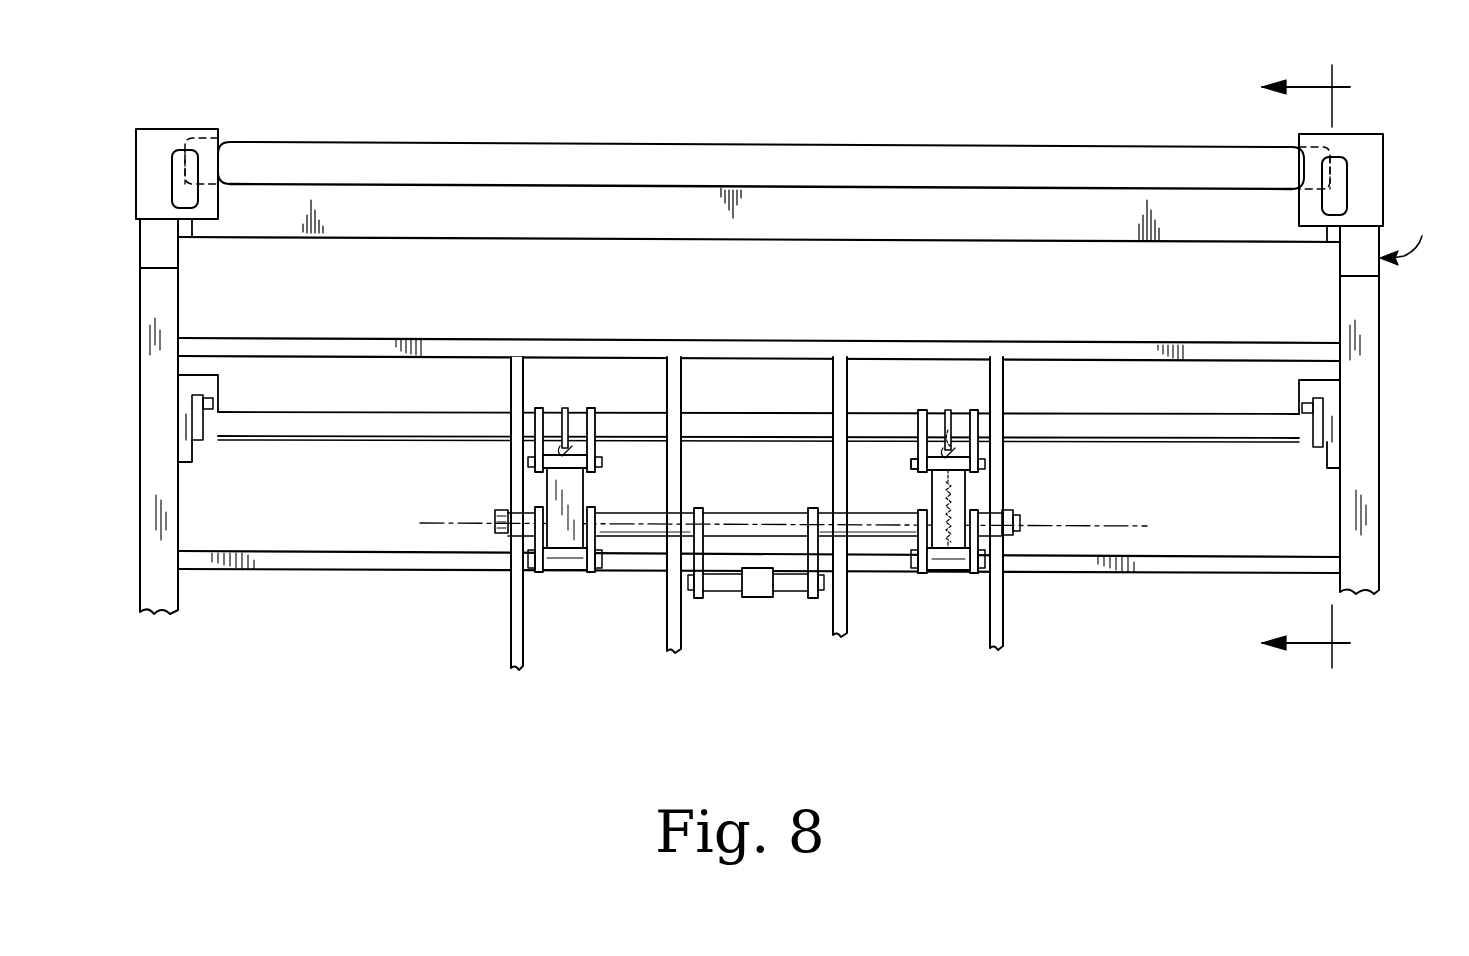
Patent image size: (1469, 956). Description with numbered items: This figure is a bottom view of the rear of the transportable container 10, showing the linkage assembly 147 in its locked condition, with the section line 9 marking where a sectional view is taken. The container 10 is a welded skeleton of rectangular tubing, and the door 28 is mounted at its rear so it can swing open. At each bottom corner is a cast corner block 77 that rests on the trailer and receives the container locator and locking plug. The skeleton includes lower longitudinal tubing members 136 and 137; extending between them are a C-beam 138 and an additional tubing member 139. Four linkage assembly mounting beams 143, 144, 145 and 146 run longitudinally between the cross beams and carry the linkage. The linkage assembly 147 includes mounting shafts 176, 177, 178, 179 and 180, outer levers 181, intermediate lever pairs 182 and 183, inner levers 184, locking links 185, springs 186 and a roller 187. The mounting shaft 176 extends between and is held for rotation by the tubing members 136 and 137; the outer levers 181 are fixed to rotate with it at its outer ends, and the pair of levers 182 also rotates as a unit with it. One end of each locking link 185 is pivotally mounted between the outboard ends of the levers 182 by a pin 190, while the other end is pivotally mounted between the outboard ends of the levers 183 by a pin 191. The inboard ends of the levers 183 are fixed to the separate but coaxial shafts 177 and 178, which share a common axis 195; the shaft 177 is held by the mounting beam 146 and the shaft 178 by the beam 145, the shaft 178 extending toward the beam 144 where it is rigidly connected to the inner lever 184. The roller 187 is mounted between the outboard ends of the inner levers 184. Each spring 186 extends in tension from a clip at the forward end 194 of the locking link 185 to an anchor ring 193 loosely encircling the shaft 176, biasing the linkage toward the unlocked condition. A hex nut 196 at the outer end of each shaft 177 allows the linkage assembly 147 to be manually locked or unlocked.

The section line 9- 9 is at (1315, 366).
The transportable container 10 is at (1409, 238).
The door 28 is at (400, 141).
The corner block 77 is at (160, 129).
The longitudinal tubing member 136 is at (178, 302).
The longitudinal tubing member 137 is at (1380, 314).
The C-beam 138 is at (1320, 342).
The tubing member 139 is at (1192, 243).
The linkage assembly mounting beam 143 is at (540, 357).
The linkage assembly mounting beam 144 is at (696, 357).
The linkage assembly mounting beam 145 is at (864, 357).
The linkage assembly mounting beam 146 is at (1018, 359).
The linkage assembly 147 is at (452, 628).
The mounting shaft 176 is at (1204, 444).
The shaft 177 is at (988, 536).
The shaft 178 is at (816, 510).
The mounting shaft 179 is at (616, 538).
The mounting shaft 180 is at (500, 536).
The outer lever 181 is at (206, 426).
The intermediate lever 182 is at (565, 392).
The intermediate lever 183 is at (565, 612).
The inner lever 184 is at (808, 548).
The locking link 185 is at (966, 484).
The spring 186 is at (934, 502).
The roller 187 is at (758, 597).
The pin 190 is at (911, 464).
The pin 191 is at (982, 574).
The anchor ring 193 is at (962, 432).
The forward end 194 is at (922, 548).
The common axis 195 is at (1128, 526).
The hex nut 196 is at (1022, 514).